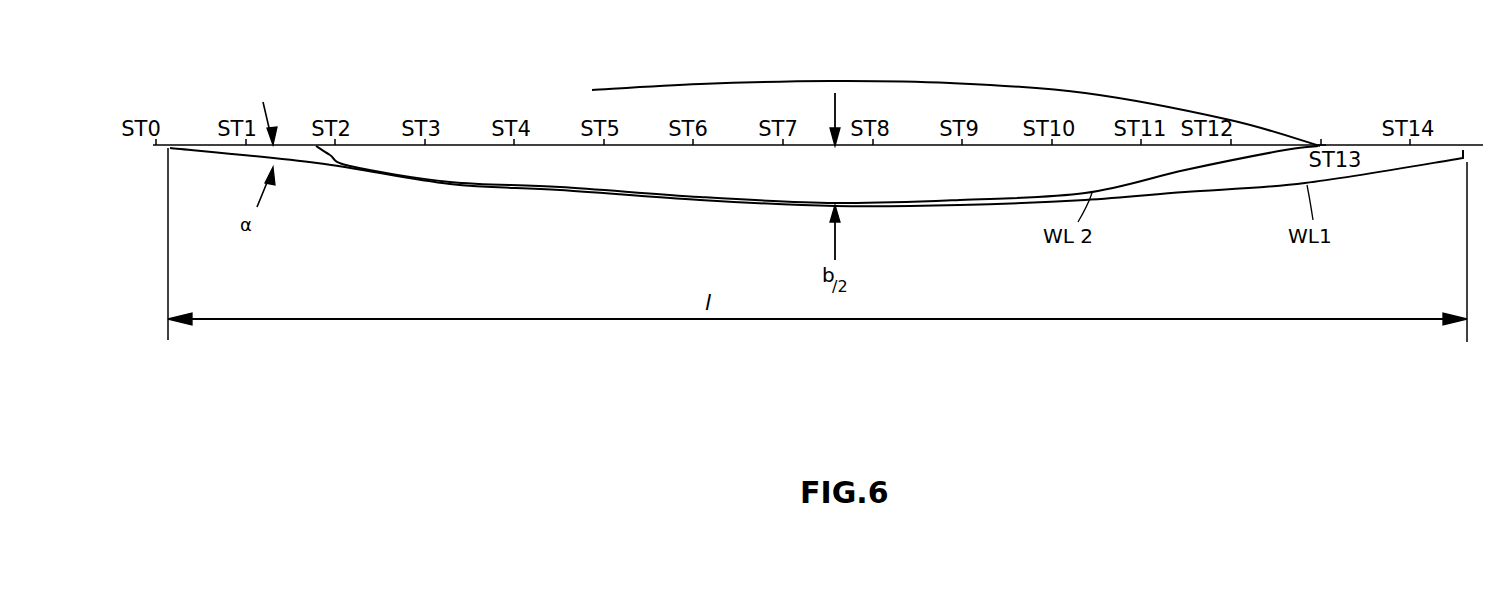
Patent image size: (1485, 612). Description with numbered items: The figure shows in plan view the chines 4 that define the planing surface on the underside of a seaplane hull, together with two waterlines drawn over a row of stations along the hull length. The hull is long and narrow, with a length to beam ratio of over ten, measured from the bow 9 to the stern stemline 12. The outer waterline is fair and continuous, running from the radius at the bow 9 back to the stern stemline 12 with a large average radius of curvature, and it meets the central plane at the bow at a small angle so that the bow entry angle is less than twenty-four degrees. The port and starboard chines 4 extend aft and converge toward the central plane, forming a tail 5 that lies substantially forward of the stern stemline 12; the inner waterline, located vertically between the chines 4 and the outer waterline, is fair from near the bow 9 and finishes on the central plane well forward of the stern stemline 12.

The chines 4 is at (1088, 94).
The tail 5 is at (1328, 145).
The bow 9 is at (179, 145).
The stern stemline 12 is at (1467, 145).